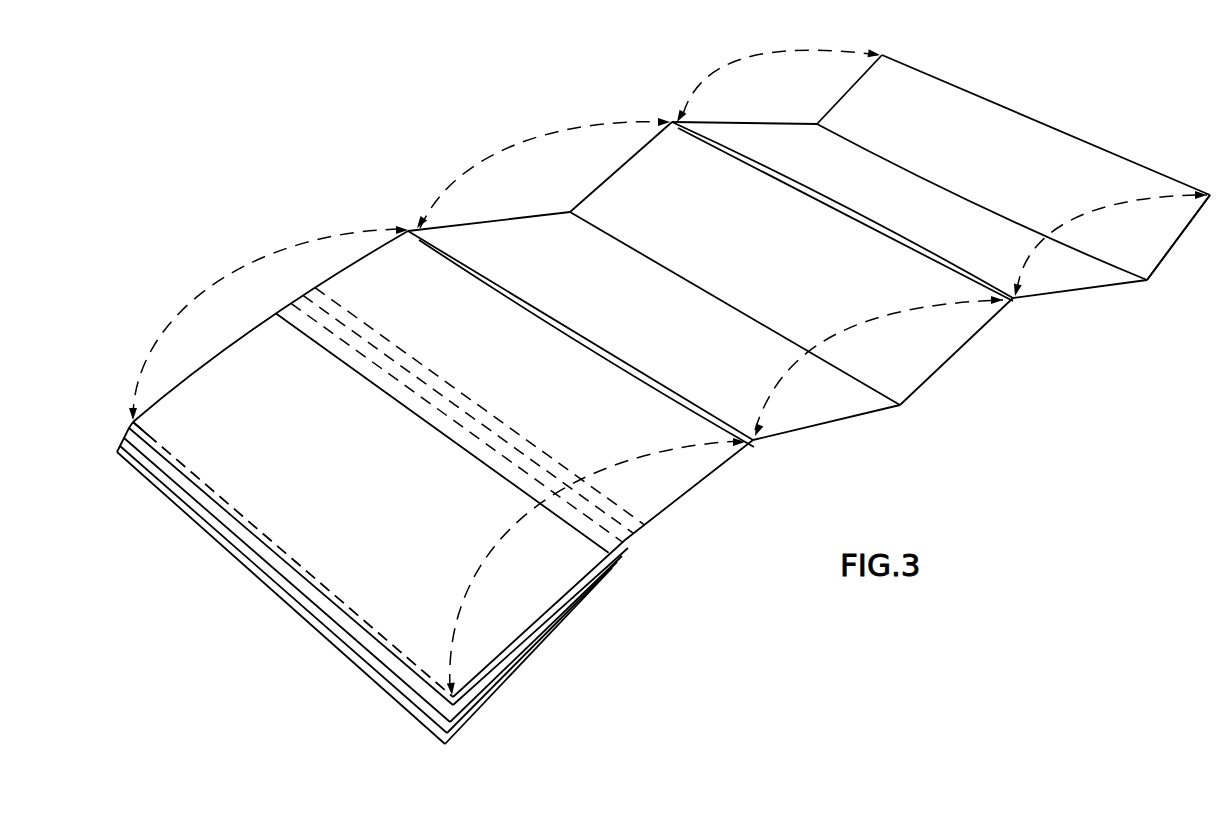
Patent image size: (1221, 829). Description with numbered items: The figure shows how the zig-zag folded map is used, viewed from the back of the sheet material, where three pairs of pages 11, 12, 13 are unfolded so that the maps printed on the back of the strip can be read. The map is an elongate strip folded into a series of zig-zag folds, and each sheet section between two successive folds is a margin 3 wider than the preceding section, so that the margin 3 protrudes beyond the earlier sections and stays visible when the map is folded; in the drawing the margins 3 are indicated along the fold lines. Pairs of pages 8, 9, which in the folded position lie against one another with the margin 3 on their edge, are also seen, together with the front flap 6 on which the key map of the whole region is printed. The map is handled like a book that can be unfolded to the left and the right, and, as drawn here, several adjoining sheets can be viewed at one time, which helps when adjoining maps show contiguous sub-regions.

The margin 3 is at (580, 331).
The front flap 6 is at (1017, 167).
The pair of pages 8 is at (1028, 304).
The pair of pages 9 is at (736, 448).
The pair of pages 11 is at (1160, 276).
The pair of pages 12 is at (905, 397).
The pair of pages 13 is at (585, 557).